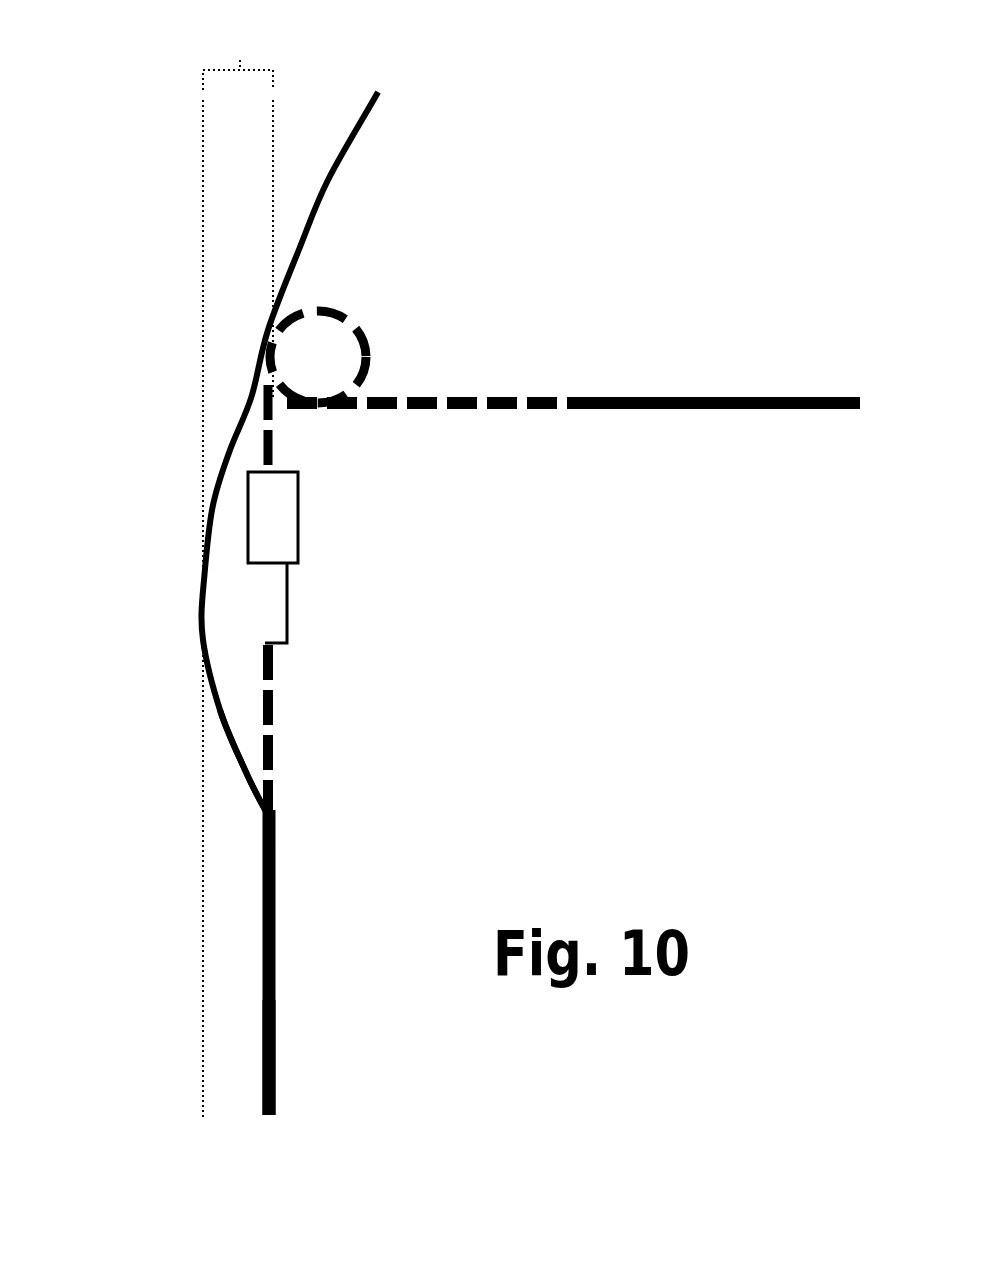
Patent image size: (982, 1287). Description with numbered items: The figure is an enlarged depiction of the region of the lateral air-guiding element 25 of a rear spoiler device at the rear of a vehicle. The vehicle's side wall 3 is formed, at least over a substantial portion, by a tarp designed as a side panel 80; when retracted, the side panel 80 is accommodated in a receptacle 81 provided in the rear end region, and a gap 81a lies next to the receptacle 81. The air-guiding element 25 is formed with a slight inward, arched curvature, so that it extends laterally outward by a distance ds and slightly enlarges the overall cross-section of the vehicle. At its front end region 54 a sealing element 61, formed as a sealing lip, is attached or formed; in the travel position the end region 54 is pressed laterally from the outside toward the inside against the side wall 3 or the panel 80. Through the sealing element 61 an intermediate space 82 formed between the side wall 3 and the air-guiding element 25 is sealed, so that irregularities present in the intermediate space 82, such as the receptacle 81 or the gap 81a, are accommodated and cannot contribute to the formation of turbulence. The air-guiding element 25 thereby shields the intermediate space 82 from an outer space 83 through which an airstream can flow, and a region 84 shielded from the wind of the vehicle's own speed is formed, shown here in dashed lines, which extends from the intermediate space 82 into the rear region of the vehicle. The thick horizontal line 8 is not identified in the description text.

The distance ds is at (238, 558).
The lateral air-guiding element 25 is at (222, 712).
The region shielded from the wind 84 is at (500, 258).
The support bar 8 is at (711, 397).
The outer space 83 is at (98, 518).
The intermediate space 82 is at (240, 683).
The receptacle 81 is at (282, 540).
The gap 81a is at (277, 608).
The front end region 54 is at (250, 795).
The sealing element 61 is at (258, 808).
The side wall 3 is at (262, 963).
The side panel 80 is at (265, 1038).